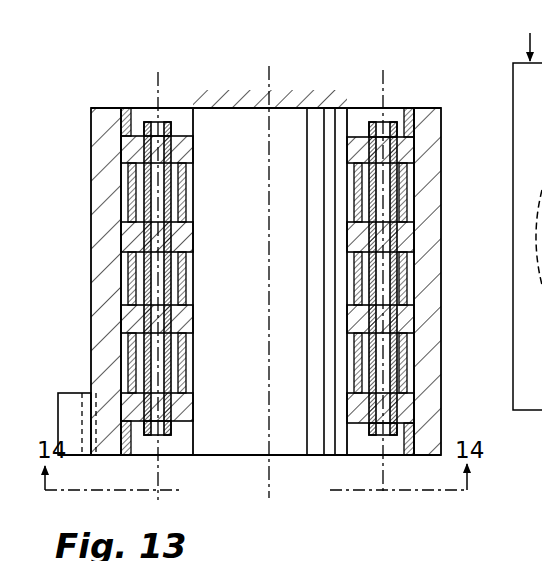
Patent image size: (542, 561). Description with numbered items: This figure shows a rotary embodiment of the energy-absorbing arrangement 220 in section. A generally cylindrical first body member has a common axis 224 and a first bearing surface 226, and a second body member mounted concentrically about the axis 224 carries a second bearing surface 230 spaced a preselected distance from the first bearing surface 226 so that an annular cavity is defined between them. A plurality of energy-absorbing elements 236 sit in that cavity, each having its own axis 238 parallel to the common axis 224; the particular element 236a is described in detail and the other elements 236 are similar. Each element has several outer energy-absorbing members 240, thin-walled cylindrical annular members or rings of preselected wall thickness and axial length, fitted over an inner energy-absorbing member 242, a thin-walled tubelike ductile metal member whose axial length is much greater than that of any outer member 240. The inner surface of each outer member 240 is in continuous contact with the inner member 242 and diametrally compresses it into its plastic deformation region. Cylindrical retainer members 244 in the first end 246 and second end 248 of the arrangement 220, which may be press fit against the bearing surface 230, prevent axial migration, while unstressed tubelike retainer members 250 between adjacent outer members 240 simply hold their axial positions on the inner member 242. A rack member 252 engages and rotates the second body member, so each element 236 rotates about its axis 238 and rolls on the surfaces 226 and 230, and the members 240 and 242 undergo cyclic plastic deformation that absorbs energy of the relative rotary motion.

The energy-absorbing arrangement 220 is at (463, 40).
The axis 224 is at (271, 72).
The first bearing surface 226 is at (194, 117).
The second bearing surface 230 is at (121, 170).
The energy-absorbing element 236 is at (145, 122).
The energy-absorbing element 236a is at (397, 124).
The axis 238 is at (158, 492).
The outer energy-absorbing member 240 is at (190, 152).
The inner energy-absorbing member 242 is at (170, 439).
The cylindrical retainer member 244 is at (137, 109).
The first end 246 is at (250, 484).
The second end 248 is at (376, 90).
The tubelike retainer member 250 is at (127, 200).
The rack member 252 is at (64, 393).